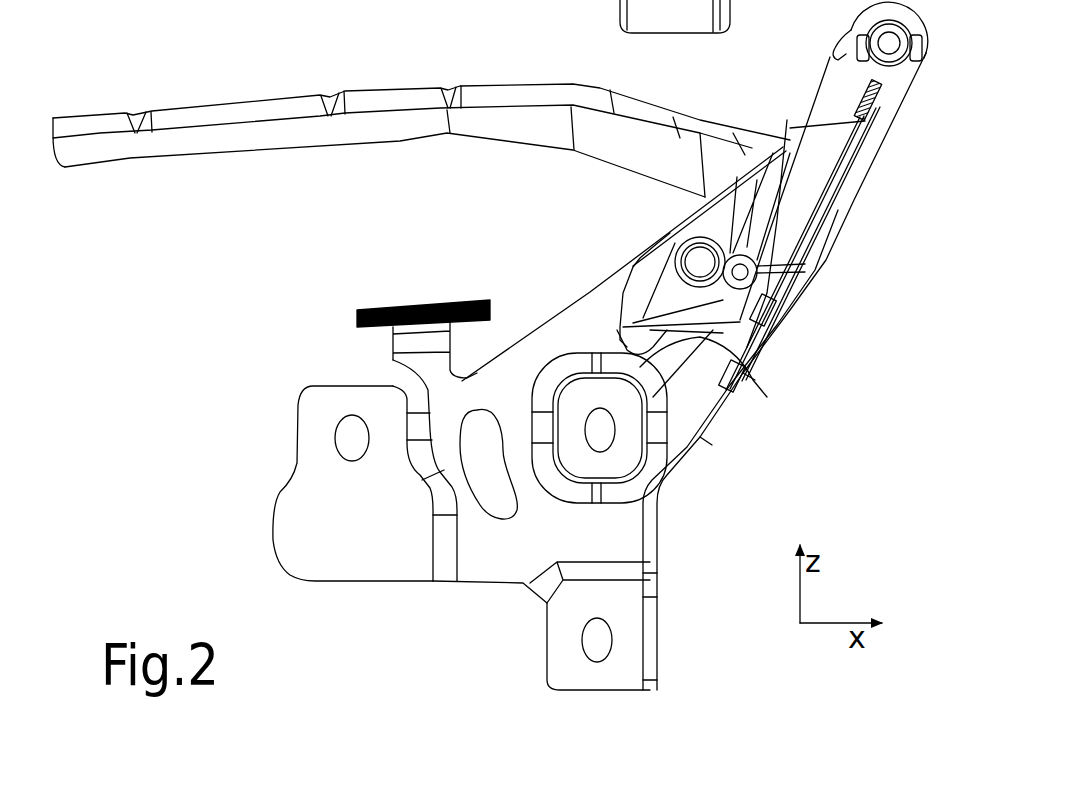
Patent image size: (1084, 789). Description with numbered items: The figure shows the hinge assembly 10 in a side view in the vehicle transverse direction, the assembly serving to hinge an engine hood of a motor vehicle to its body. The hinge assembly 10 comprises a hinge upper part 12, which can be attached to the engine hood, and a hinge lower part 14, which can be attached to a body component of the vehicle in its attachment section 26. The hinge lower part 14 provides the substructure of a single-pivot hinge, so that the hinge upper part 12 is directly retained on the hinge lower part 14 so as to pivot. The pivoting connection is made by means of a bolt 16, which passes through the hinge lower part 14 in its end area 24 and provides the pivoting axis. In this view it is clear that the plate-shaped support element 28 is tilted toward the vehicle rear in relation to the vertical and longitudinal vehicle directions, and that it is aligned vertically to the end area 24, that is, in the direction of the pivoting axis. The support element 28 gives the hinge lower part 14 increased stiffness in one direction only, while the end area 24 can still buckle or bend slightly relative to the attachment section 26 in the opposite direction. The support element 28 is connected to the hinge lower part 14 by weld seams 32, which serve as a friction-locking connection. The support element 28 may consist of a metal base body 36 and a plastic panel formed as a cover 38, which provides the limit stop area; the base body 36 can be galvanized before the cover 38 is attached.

The hinge assembly 10 is at (180, 97).
The hinge upper part 12 is at (268, 145).
The hinge lower part 14 is at (683, 500).
The bolt 16 is at (840, 53).
The end area 24 is at (830, 113).
The attachment section 26 is at (500, 553).
The support element 28 is at (840, 182).
The weld seams 32 is at (787, 300).
The base body 36 is at (813, 217).
The cover 38 is at (877, 107).